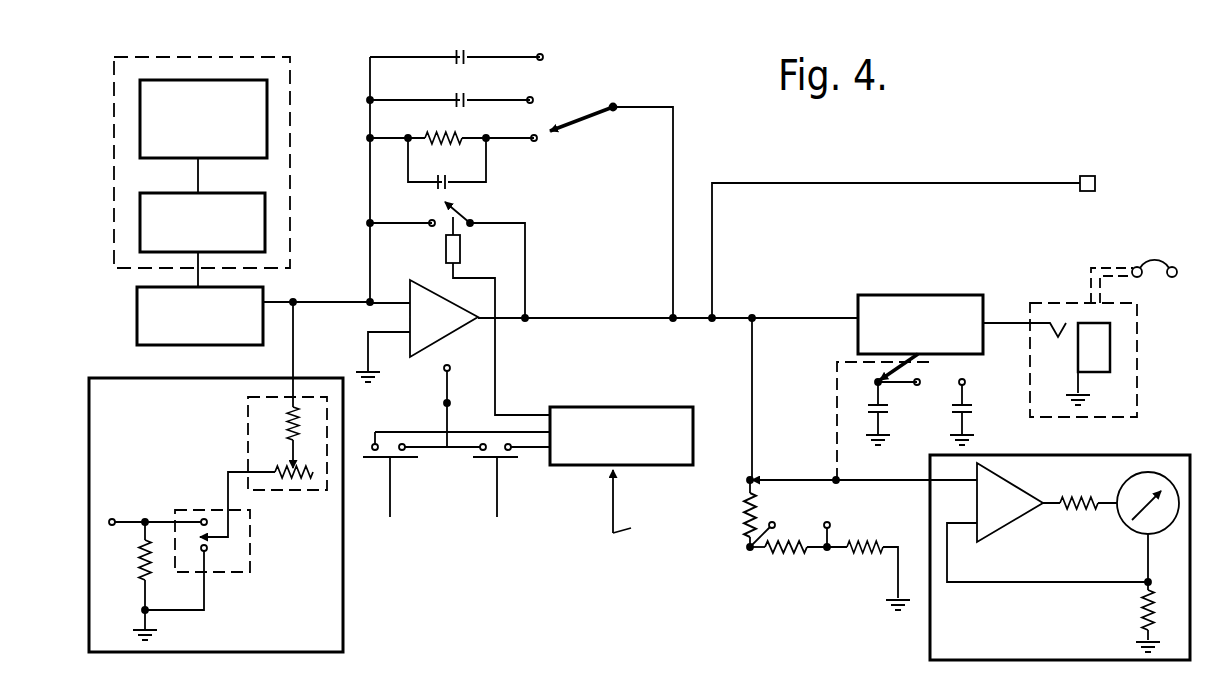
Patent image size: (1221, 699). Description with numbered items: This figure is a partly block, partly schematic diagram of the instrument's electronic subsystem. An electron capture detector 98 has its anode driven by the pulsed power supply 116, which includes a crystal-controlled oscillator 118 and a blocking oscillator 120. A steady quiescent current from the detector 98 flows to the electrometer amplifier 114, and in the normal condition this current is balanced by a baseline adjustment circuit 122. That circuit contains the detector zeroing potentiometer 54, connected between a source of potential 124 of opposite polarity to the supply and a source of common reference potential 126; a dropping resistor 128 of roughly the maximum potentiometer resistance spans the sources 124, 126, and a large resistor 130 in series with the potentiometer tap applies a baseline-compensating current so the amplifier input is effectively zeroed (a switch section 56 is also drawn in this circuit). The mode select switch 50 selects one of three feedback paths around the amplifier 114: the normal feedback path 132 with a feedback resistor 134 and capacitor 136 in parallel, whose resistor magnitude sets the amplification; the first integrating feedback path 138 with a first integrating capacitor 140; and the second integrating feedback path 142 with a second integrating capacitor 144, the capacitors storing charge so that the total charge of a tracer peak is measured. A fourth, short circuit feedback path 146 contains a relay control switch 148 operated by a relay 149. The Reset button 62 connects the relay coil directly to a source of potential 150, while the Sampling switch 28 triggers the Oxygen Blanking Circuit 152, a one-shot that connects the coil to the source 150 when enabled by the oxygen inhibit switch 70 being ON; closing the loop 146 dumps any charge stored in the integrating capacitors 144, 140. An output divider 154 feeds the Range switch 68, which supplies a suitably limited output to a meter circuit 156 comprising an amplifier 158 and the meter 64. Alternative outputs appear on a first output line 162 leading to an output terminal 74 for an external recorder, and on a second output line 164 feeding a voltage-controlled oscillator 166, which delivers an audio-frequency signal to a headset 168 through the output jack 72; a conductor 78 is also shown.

The sampling switch 28 is at (515, 467).
The mode select switch 50 is at (655, 90).
The detector zeroing potentiometer 54 is at (257, 401).
The switch section 56 is at (245, 565).
The reset button 62 is at (398, 466).
The meter 64 is at (1122, 519).
The range switch 68 is at (834, 480).
The oxygen inhibit switch 70 is at (660, 514).
The output jack 72 is at (1033, 304).
The output terminal 74 is at (1085, 196).
The conductor 78 is at (682, 693).
The electron capture detector 98 is at (137, 320).
The electrometer amplifier 114 is at (425, 280).
The pulsed power supply 116 is at (113, 218).
The crystal-controlled oscillator 118 is at (263, 152).
The blocking oscillator 120 is at (262, 235).
The baseline adjustment circuit 122 is at (288, 652).
The source of potential 124 is at (113, 518).
The source of common reference potential 126 is at (361, 369).
The dropping resistor 128 is at (138, 570).
The large resistor 130 is at (285, 433).
The normal feedback path 132 is at (387, 135).
The feedback resistor 134 is at (455, 136).
The capacitor 136 is at (455, 185).
The Integrate 1 feedback path 138 is at (430, 82).
The first integrating capacitor 140 is at (472, 98).
The Integrate 2 feedback path 142 is at (418, 56).
The second integrating capacitor 144 is at (473, 56).
The short circuit feedback path 146 is at (383, 227).
The relay control switch 148 is at (462, 214).
The relay 149 is at (460, 252).
The source of potential 150 is at (444, 366).
The oxygen blanking circuit 152 is at (692, 408).
The output divider 154 is at (799, 517).
The meter circuit 156 is at (927, 658).
The amplifier 158 is at (1025, 510).
The first output line 162 is at (882, 186).
The second output line 164 is at (805, 303).
The voltage-controlled oscillator 166 is at (957, 297).
The headset 168 is at (1158, 278).